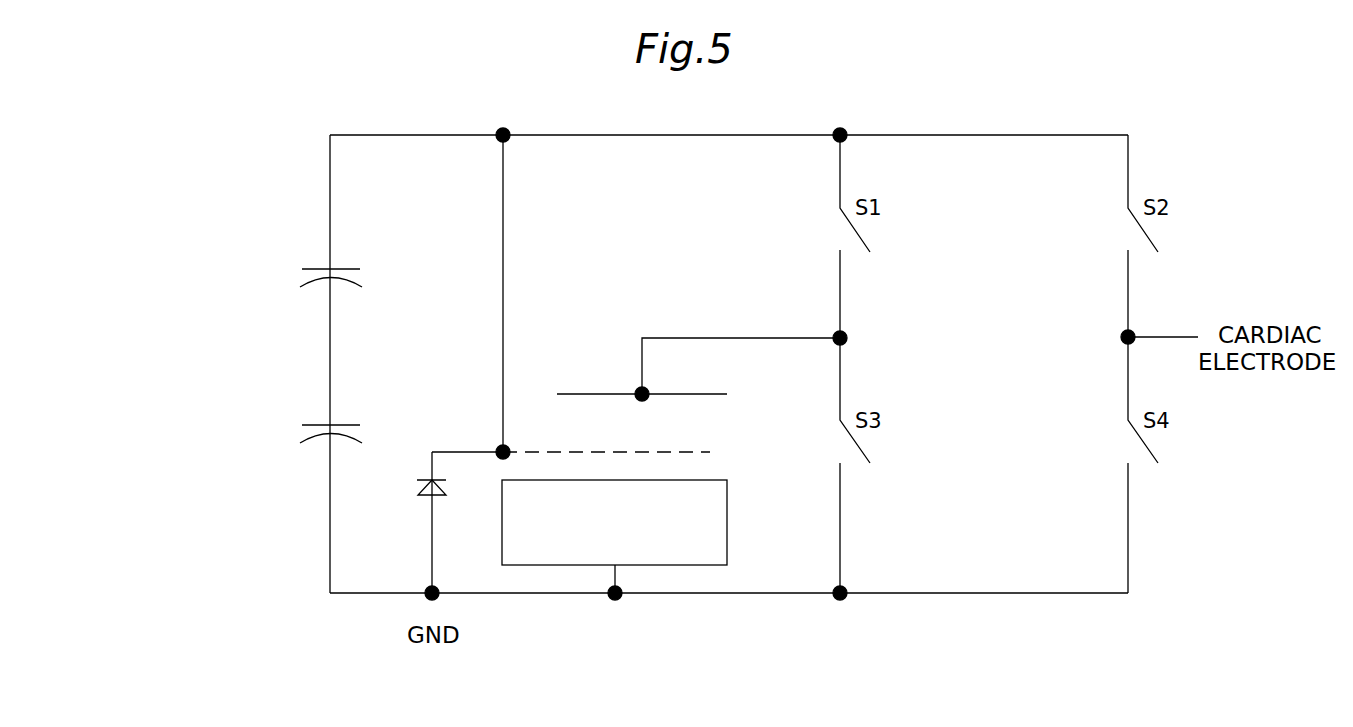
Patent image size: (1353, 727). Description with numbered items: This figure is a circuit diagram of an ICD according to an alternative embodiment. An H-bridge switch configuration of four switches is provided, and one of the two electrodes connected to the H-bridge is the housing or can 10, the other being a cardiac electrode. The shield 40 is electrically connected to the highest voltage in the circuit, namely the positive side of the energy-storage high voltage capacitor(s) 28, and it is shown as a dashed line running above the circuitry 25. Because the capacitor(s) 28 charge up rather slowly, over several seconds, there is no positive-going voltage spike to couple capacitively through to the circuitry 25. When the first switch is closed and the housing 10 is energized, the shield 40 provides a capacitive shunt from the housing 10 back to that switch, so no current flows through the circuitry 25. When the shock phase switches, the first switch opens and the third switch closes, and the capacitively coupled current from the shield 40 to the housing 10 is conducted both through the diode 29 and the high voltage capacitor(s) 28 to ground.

The housing or can 10 is at (727, 394).
The circuitry 25 is at (727, 547).
The high voltage capacitor(s) 28 is at (380, 293).
The diode 29 is at (417, 490).
The shield 40 is at (710, 452).